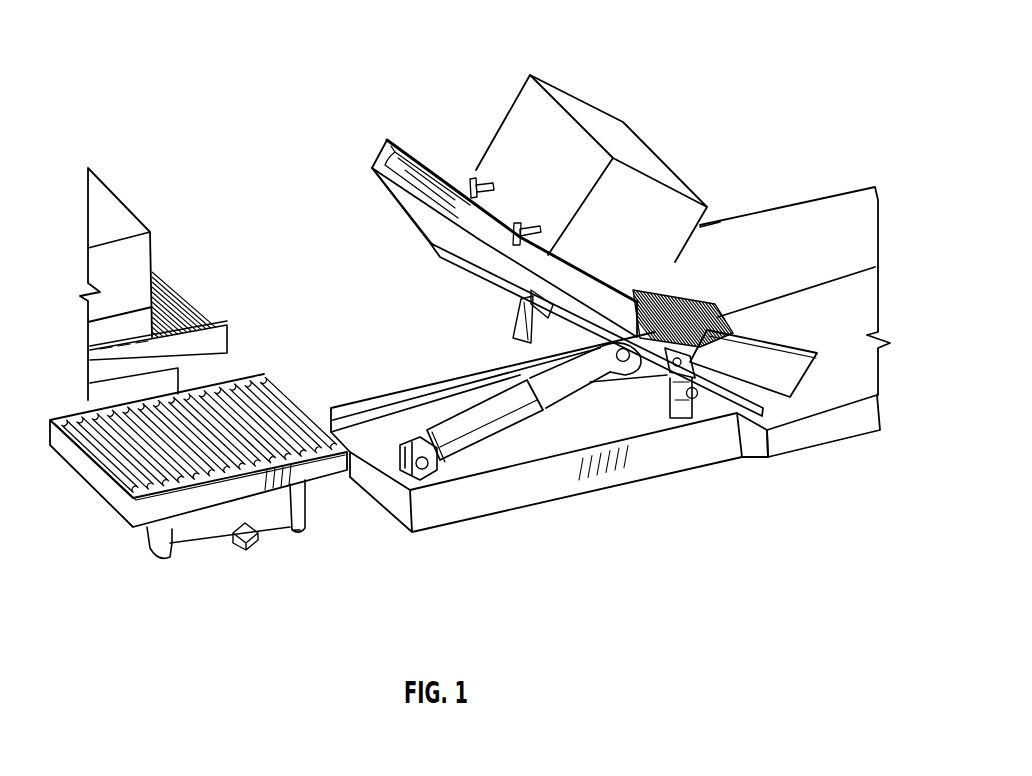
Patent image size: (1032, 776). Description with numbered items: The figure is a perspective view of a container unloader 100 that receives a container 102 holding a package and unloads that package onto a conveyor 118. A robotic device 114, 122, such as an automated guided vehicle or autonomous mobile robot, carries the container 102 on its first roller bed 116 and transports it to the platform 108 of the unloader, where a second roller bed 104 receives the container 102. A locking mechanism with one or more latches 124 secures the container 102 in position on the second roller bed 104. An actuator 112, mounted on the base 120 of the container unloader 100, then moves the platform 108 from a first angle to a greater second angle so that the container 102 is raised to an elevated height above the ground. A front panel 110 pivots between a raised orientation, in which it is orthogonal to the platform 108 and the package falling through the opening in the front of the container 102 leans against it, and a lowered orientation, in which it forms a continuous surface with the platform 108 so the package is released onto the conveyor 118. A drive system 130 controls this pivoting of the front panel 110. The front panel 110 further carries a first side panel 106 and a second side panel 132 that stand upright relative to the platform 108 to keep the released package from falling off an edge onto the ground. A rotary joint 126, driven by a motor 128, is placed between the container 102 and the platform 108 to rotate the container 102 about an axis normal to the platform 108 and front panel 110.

The container unloader 100 is at (358, 122).
The container 102 is at (518, 145).
The second roller bed 104 is at (422, 185).
The first side panel 106 is at (787, 373).
The platform 108 is at (430, 246).
The front panel 110 is at (723, 317).
The actuator 112 is at (520, 405).
The robotic device 114 is at (248, 485).
The first roller bed 116 is at (110, 450).
The conveyor 118 is at (860, 366).
The base 120 is at (384, 480).
The robotic device 122 is at (157, 283).
The latch 124 is at (477, 178).
The rotary joint 126 is at (512, 325).
The motor 128 is at (590, 397).
The drive system 130 is at (695, 378).
The second side panel 132 is at (700, 263).